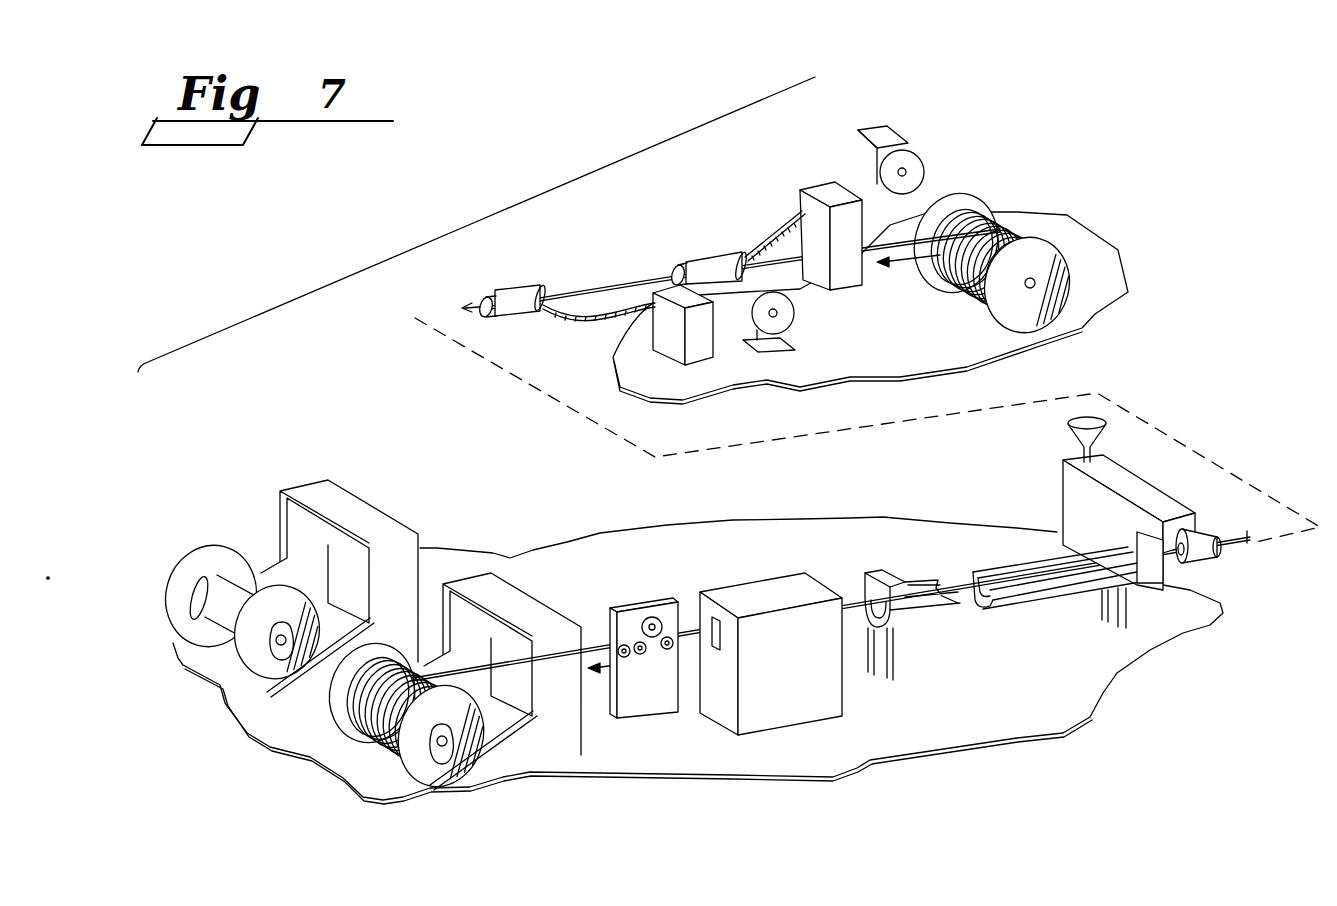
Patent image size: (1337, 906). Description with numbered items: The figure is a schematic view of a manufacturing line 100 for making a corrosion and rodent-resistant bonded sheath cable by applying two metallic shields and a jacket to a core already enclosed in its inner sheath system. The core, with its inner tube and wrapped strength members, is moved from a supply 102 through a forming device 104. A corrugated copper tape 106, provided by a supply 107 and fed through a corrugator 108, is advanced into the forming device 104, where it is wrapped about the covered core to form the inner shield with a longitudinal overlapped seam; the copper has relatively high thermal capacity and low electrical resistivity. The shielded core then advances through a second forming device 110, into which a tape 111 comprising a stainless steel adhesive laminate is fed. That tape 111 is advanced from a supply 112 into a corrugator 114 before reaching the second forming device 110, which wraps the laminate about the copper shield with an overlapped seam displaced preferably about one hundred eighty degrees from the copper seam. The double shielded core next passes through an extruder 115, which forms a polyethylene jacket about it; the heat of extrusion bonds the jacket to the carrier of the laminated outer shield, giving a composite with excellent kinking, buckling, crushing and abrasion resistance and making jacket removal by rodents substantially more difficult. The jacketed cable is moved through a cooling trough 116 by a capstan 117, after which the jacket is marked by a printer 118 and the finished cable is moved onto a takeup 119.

The manufacturing line 100 is at (653, 233).
The supply 102 is at (1032, 248).
The forming device 104 is at (715, 260).
The corrugated copper tape 106 is at (775, 232).
The supply 107 is at (917, 155).
The corrugator 108 is at (820, 186).
The second forming device 110 is at (512, 293).
The tape 111 is at (593, 318).
The supply 112 is at (790, 318).
The corrugator 114 is at (670, 350).
The extruder 115 is at (1063, 470).
The cooling trough 116 is at (1010, 603).
The capstan 117 is at (770, 587).
The printer 118 is at (638, 600).
The takeup 119 is at (543, 620).